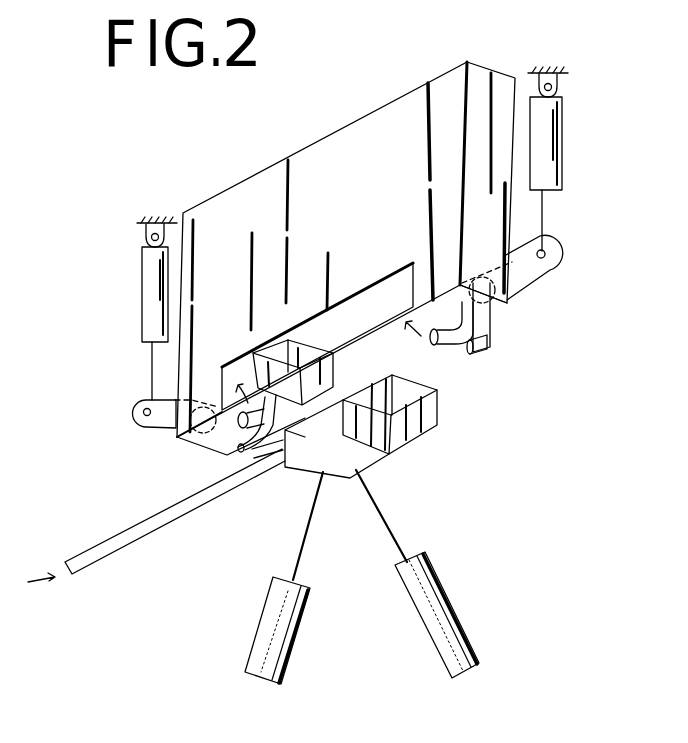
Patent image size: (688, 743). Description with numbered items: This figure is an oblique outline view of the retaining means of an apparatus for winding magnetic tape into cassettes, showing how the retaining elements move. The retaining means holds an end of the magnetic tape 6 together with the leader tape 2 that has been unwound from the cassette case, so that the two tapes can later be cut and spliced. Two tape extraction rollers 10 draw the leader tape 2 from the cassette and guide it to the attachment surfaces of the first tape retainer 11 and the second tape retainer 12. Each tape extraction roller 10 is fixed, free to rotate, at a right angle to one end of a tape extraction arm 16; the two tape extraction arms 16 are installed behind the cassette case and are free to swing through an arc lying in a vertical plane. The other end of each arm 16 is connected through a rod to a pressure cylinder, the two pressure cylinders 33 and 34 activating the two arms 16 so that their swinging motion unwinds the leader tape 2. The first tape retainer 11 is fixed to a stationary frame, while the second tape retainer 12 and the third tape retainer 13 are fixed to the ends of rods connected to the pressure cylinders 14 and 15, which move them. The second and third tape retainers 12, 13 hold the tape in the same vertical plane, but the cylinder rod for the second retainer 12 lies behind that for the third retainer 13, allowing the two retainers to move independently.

The leader tape 2 is at (232, 447).
The magnetic tape 6 is at (100, 556).
The tape extraction roller 10 is at (275, 452).
The first tape retainer 11 is at (437, 418).
The second tape retainer 12 is at (333, 363).
The third tape retainer 13 is at (338, 478).
The pressure cylinder 14 is at (479, 650).
The pressure cylinder 15 is at (284, 672).
The tape extraction arm 16 is at (134, 428).
The pressure cylinder 33 is at (562, 150).
The pressure cylinder 34 is at (145, 318).